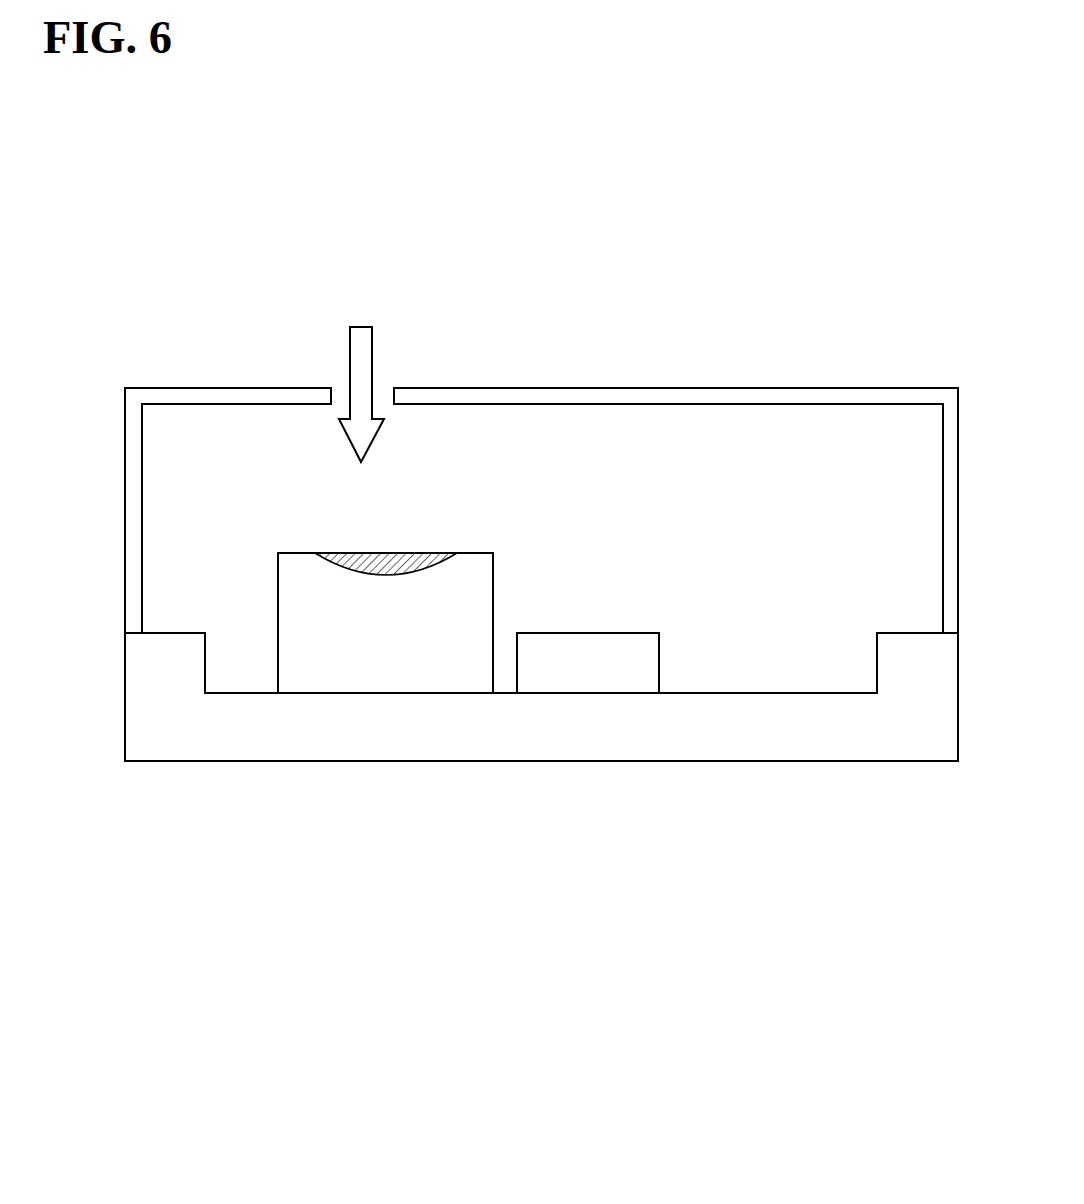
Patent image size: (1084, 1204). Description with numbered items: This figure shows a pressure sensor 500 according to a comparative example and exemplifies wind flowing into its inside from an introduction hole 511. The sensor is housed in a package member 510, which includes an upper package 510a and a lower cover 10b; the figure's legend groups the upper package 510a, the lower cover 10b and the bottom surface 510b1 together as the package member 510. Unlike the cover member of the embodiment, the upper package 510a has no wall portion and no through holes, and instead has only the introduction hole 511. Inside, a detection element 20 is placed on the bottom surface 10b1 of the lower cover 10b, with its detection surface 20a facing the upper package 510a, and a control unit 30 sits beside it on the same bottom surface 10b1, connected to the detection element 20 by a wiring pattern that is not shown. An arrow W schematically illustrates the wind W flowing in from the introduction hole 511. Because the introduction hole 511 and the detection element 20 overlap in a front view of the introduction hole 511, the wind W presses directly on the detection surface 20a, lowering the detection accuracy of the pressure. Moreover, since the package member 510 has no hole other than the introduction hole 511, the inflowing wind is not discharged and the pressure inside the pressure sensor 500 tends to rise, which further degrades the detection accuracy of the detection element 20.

The pressure sensor 500 is at (177, 197).
The package member 510 is at (455, 1047).
The upper package 510a is at (806, 388).
The introduction hole 511 is at (392, 387).
The lower cover 10b is at (715, 762).
The bottom surface 10b1 is at (717, 693).
The bottom surface of base 510b1 is at (541, 872).
The detection element 20 is at (303, 552).
The detection surface 20a is at (415, 552).
The control unit 30 is at (568, 632).
The wind W is at (355, 327).